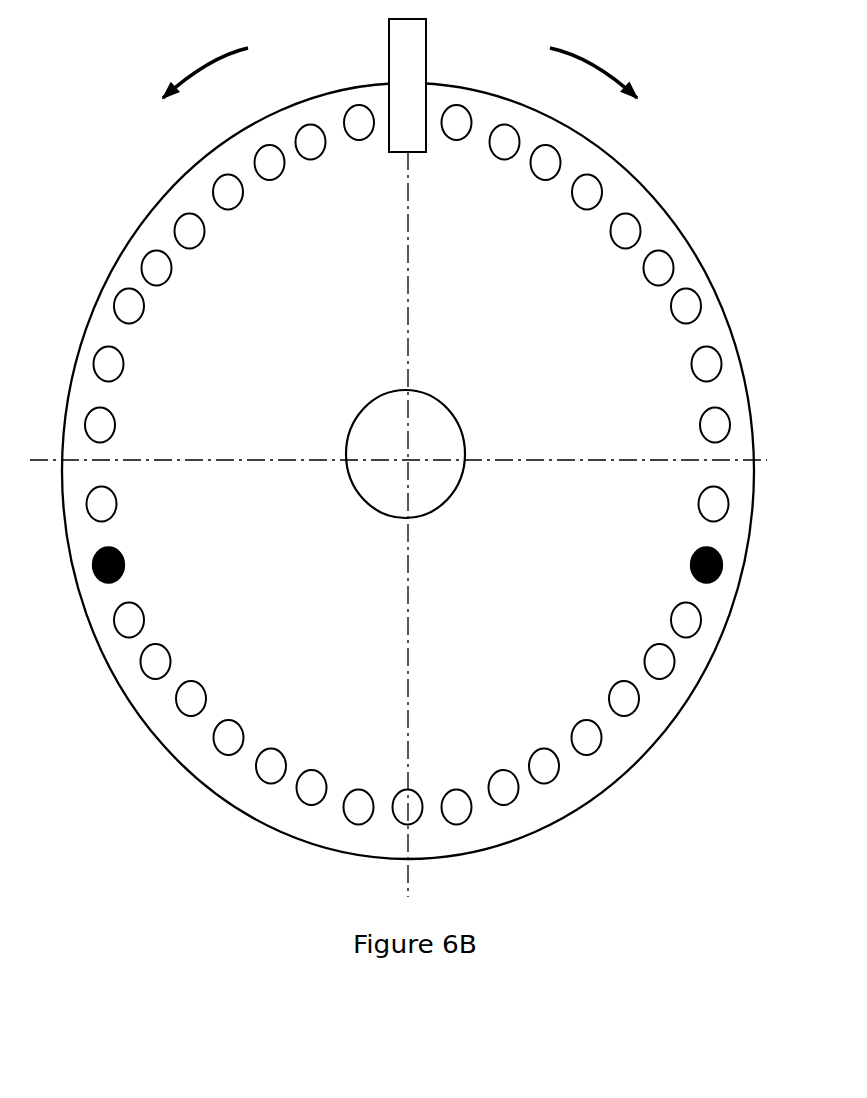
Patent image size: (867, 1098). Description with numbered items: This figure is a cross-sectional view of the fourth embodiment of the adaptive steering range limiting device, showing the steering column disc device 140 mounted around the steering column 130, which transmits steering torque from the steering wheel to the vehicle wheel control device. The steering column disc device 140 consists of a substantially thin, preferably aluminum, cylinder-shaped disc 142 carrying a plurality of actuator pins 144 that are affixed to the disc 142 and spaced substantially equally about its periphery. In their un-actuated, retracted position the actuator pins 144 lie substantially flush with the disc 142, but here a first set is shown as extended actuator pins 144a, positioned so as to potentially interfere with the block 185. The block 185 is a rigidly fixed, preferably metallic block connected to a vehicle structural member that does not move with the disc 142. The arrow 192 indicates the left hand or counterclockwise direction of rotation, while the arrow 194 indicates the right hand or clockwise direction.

The steering column 130 is at (451, 498).
The steering column disc device 140 is at (409, 490).
The disc 142 is at (565, 823).
The actuator pin 144 is at (180, 710).
The actuator pin - extended 144a is at (710, 548).
The block 185 is at (428, 43).
The left hand or CCW direction indication arrow 192 is at (182, 70).
The right hand or CW direction indication arrow 194 is at (622, 72).